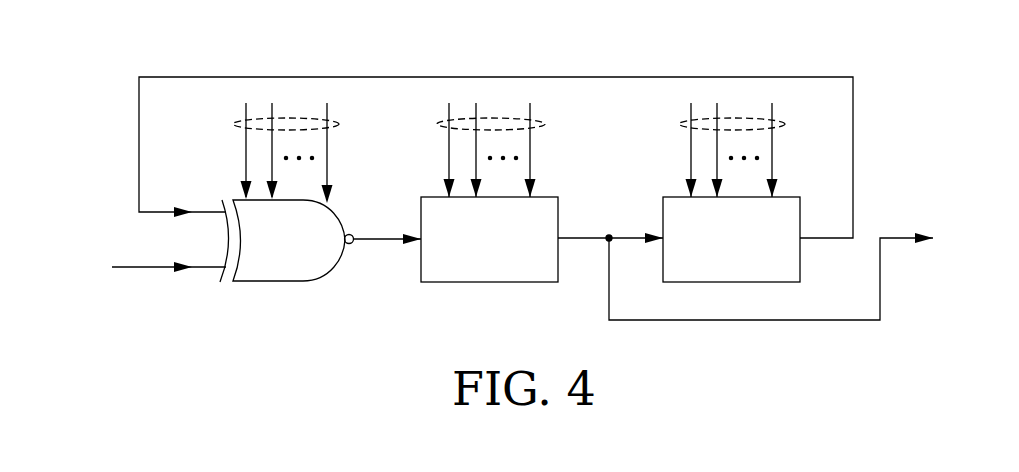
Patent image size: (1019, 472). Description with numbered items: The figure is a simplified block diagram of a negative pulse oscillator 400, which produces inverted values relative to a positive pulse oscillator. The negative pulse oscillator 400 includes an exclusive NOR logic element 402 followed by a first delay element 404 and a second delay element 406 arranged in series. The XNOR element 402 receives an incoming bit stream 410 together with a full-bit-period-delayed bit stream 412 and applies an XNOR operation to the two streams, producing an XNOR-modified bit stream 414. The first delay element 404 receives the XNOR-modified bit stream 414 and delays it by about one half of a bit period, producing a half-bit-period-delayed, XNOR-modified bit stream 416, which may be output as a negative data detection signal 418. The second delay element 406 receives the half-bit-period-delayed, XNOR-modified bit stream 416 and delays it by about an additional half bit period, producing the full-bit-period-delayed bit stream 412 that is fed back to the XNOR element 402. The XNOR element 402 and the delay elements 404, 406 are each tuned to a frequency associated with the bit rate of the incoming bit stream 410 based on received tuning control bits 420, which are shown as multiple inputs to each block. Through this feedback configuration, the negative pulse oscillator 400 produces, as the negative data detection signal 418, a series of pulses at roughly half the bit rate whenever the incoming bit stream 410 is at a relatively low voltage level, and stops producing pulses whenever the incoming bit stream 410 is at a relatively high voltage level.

The negative pulse oscillator 400 is at (946, 94).
The exclusive NOR (XNOR) logic element 402 is at (287, 281).
The first delay element 404 is at (558, 208).
The second delay element 406 is at (800, 208).
The incoming bit stream 410 is at (141, 268).
The full-bit-period-delayed bit stream 412 is at (139, 132).
The XNOR-modified bit stream 414 is at (379, 236).
The half-bit-period-delayed, XNOR-modified bit stream 416 is at (624, 236).
The negative data detection signal 418 is at (812, 321).
The tuning control bits 420 is at (339, 124).